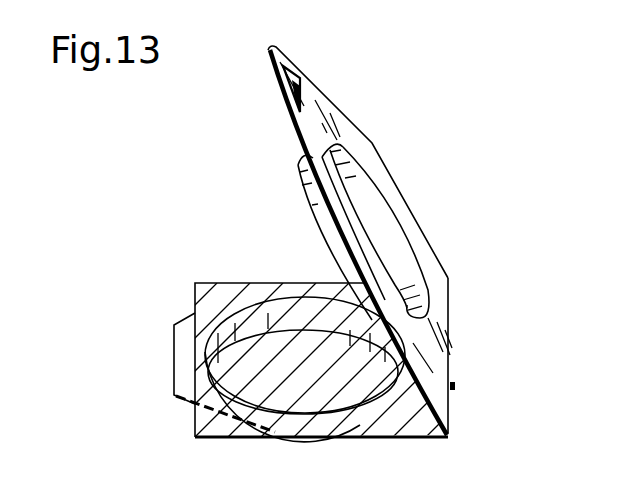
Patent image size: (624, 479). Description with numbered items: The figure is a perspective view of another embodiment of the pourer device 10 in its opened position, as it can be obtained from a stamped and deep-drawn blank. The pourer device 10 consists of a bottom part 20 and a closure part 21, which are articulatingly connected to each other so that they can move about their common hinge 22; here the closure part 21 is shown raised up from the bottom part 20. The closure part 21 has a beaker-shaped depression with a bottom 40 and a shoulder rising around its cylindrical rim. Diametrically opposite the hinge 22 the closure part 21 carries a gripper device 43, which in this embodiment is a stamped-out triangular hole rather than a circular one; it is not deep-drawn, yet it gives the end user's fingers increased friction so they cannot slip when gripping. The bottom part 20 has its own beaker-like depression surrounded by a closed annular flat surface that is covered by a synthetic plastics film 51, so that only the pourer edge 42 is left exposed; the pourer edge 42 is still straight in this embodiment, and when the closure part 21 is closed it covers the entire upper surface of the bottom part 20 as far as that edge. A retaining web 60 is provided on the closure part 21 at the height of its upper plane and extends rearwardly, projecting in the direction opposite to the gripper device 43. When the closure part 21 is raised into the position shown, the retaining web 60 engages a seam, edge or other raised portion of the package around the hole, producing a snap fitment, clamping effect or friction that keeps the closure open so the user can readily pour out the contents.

The pourer device 10 is at (411, 94).
The gripper device 43 is at (293, 62).
The closure part 21 is at (363, 229).
The bottom 40 is at (378, 259).
The bottom part 20 is at (212, 326).
The synthetic plastics film 51 is at (211, 302).
The pourer edge 42 is at (173, 370).
The hinge 22 is at (452, 422).
The retaining web 60 is at (450, 360).